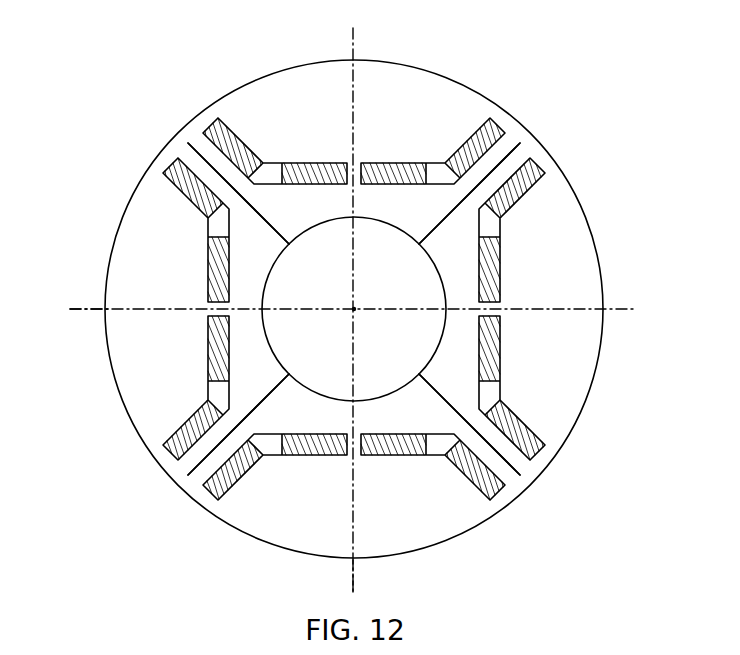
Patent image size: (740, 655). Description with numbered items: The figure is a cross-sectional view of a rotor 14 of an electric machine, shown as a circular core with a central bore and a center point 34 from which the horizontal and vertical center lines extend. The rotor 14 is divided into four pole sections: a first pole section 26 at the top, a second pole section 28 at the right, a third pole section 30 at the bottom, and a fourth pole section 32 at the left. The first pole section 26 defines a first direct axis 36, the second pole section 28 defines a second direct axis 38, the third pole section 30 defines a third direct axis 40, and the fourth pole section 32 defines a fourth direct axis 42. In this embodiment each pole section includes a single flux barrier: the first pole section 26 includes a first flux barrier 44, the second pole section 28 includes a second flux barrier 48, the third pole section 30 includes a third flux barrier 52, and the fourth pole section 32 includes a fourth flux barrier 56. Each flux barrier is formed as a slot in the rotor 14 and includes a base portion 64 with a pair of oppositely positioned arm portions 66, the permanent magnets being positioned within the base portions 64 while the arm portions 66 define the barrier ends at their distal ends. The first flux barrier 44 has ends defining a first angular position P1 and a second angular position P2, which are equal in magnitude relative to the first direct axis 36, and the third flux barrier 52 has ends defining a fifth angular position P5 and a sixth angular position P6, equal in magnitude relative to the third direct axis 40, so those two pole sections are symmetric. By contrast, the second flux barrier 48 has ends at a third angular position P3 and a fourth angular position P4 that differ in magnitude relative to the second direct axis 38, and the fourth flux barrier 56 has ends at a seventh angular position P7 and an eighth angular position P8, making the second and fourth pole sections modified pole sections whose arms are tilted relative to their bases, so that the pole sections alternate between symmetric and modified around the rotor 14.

The rotor 14 is at (480, 57).
The first pole section 26 is at (430, 102).
The second pole section 28 is at (562, 237).
The third pole section 30 is at (430, 520).
The fourth pole section 32 is at (128, 355).
The rotor axis 34 is at (357, 310).
The first direct axis 36 is at (354, 46).
The second direct axis 38 is at (612, 309).
The third direct axis 40 is at (352, 572).
The fourth direct axis 42 is at (90, 308).
The first flux barrier 44 is at (430, 184).
The second flux barrier 48 is at (497, 283).
The third flux barrier 52 is at (316, 456).
The fourth flux barrier 56 is at (209, 231).
The base portion 64 is at (318, 163).
The arm portions 66 is at (240, 133).
The first angular position P1 is at (215, 110).
The second angular position P2 is at (493, 110).
The third angular position P3 is at (553, 172).
The fourth angular position P4 is at (547, 457).
The fifth angular position P5 is at (498, 513).
The sixth angular position P6 is at (212, 512).
The seventh angular position P7 is at (152, 445).
The eighth angular position P8 is at (165, 172).